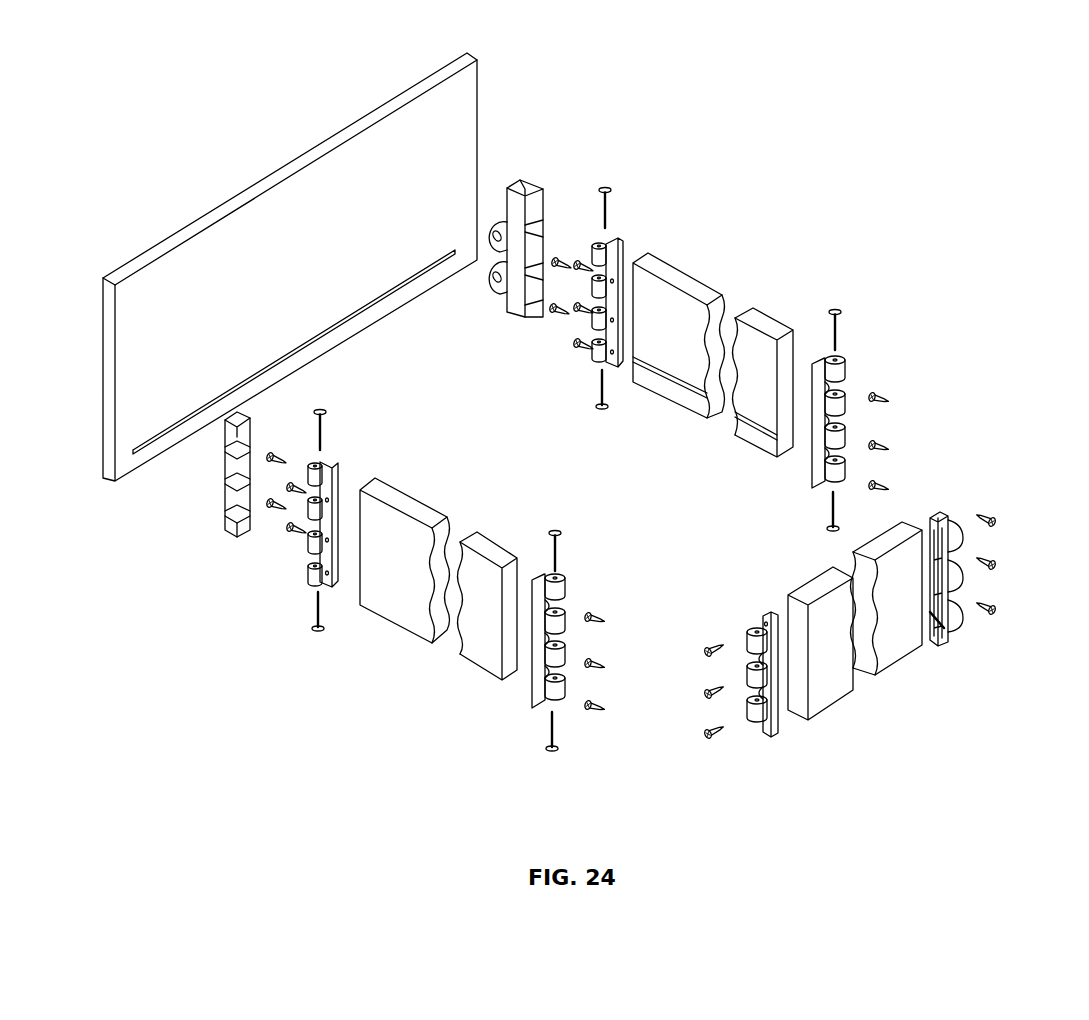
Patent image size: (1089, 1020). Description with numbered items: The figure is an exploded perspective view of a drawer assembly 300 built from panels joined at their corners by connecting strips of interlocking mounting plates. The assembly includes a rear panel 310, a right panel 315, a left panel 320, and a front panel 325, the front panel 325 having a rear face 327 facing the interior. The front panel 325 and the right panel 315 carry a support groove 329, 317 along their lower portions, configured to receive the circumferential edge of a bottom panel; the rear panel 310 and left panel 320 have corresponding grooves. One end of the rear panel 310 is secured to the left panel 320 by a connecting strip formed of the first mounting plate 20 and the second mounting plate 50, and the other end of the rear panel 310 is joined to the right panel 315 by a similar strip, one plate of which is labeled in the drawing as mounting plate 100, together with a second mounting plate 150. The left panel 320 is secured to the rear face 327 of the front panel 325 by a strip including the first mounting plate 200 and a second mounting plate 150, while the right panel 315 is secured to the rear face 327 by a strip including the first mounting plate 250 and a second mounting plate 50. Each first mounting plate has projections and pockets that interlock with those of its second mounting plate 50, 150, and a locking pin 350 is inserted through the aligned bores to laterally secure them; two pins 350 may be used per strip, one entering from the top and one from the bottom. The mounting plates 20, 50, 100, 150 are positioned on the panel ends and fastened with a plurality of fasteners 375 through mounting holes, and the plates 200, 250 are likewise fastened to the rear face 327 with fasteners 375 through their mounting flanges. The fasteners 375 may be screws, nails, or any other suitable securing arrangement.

The first mounting plate 20 is at (772, 717).
The second mounting plate 50 is at (612, 240).
The hinge 100 is at (950, 632).
The second mounting plate 150 is at (340, 462).
The first mounting plate 200 is at (227, 525).
The first mounting plate 250 is at (532, 207).
The drawer assembly 300 is at (283, 668).
The rear panel 310 is at (895, 642).
The right panel 315 is at (680, 307).
The support groove 317 is at (743, 423).
The left panel 320 is at (402, 588).
The front panel 325 is at (433, 142).
The rear face 327 is at (167, 340).
The support groove 329 is at (180, 427).
The locking pin 350 is at (322, 415).
The fastener 375 is at (290, 487).